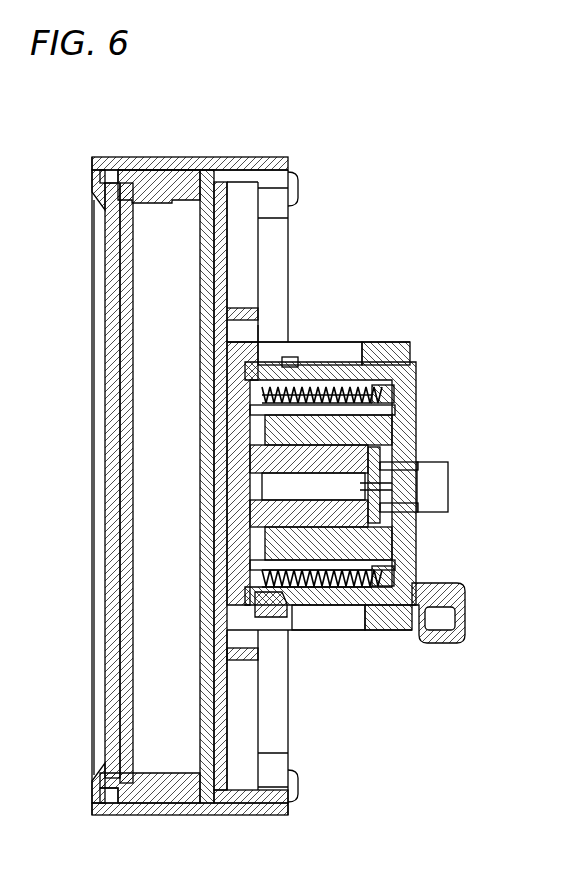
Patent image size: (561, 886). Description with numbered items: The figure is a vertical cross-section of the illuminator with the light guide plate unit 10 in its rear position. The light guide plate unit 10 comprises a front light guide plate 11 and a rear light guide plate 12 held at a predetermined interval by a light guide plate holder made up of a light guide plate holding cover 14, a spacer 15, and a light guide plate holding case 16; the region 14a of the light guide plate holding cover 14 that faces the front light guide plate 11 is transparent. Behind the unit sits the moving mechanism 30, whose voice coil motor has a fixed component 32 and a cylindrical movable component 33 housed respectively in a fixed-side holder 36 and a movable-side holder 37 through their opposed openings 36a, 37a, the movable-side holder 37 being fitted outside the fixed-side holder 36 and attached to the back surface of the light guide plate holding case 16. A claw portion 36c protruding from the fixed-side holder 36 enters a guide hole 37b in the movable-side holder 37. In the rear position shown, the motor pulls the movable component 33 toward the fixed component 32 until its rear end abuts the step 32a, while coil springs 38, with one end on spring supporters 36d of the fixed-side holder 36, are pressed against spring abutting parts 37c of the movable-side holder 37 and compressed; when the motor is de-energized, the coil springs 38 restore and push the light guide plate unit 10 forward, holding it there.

The light guide plate unit 10 is at (256, 156).
The front light guide plate 11 is at (122, 705).
The rear light guide plate 12 is at (205, 660).
The light guide plate holding cover 14 is at (98, 795).
The region 14a is at (95, 765).
The spacer 15 is at (160, 185).
The light guide plate holding case 16 is at (247, 797).
The moving mechanism 30 is at (486, 330).
The fixed component 32 is at (385, 427).
The step 32a is at (368, 447).
The movable component 33 is at (392, 522).
The fixed-side holder 36 is at (428, 388).
The opening 36a is at (258, 328).
The claw portion 36c is at (280, 357).
The spring supporter 36d is at (410, 344).
The movable-side holder 37 is at (214, 488).
The opening 37a is at (412, 633).
The guide hole 37b is at (342, 352).
The spring abutting part 37c is at (287, 602).
The coil spring 38 is at (372, 395).